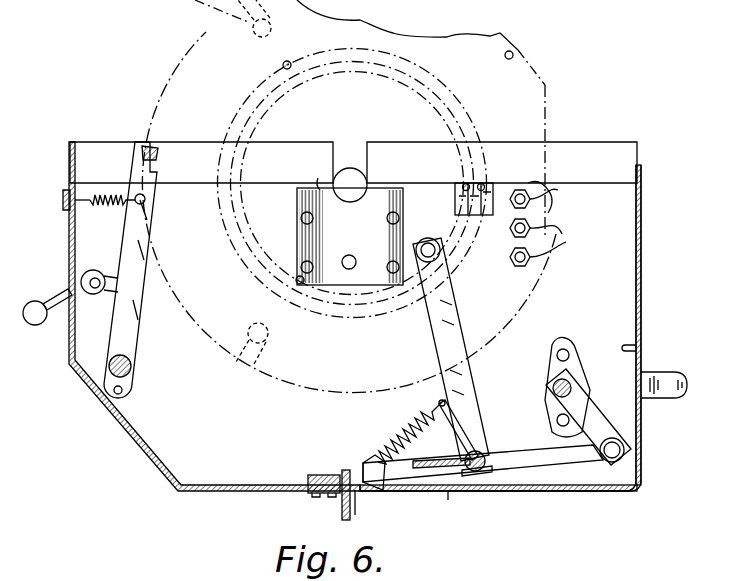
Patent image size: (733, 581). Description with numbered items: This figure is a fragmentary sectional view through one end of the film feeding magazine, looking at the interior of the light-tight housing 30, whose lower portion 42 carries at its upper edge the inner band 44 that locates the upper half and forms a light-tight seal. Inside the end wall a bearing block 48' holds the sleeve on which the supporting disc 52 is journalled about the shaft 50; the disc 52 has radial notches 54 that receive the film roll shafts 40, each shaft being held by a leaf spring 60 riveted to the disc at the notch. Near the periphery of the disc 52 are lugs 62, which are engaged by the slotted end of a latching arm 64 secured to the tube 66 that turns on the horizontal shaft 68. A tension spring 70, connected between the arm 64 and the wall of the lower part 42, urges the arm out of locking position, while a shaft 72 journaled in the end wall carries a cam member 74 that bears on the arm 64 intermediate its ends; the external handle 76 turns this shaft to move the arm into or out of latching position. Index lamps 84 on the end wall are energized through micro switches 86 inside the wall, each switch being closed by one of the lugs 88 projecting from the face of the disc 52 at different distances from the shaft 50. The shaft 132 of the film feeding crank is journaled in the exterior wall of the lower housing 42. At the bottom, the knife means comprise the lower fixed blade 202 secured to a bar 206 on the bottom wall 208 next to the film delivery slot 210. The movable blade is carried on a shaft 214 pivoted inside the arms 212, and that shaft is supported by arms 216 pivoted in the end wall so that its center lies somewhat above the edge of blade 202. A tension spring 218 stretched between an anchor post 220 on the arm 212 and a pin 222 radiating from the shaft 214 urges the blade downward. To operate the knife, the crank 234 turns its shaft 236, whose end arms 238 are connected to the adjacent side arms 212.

The light-tight housing 30 is at (118, 432).
The film roll shaft 40 is at (256, 42).
The lower portion of the housing 42 is at (70, 220).
The inner band 44 is at (640, 150).
The bearing block 48' is at (306, 171).
The shaft 50 is at (350, 168).
The supporting disc 52 is at (545, 83).
The radial notch 54 is at (548, 182).
The leaf spring 60 is at (560, 192).
The lug 62 is at (144, 150).
The latching arm 64 is at (134, 276).
The tube 66 is at (128, 378).
The shaft 68 is at (131, 364).
The tension spring 70 is at (101, 195).
The shaft 72 is at (92, 274).
The cam member 74 is at (112, 295).
The handle 76 is at (40, 300).
The index lamp 84 is at (548, 238).
The micro switch 86 is at (456, 208).
The lug 88 is at (283, 65).
The shaft 132 is at (350, 256).
The lower fixed blade 202 is at (350, 470).
The bar 206 is at (325, 475).
The bottom wall 208 is at (503, 493).
The film delivery slot 210 is at (357, 500).
The arm 212 is at (557, 465).
The shaft 214 is at (487, 475).
The arm 216 is at (455, 386).
The tension spring 218 is at (398, 440).
The anchor post 220 is at (368, 460).
The pin 222 is at (476, 448).
The crank 234 is at (690, 362).
The shaft 236 is at (575, 372).
The arm 238 is at (575, 412).